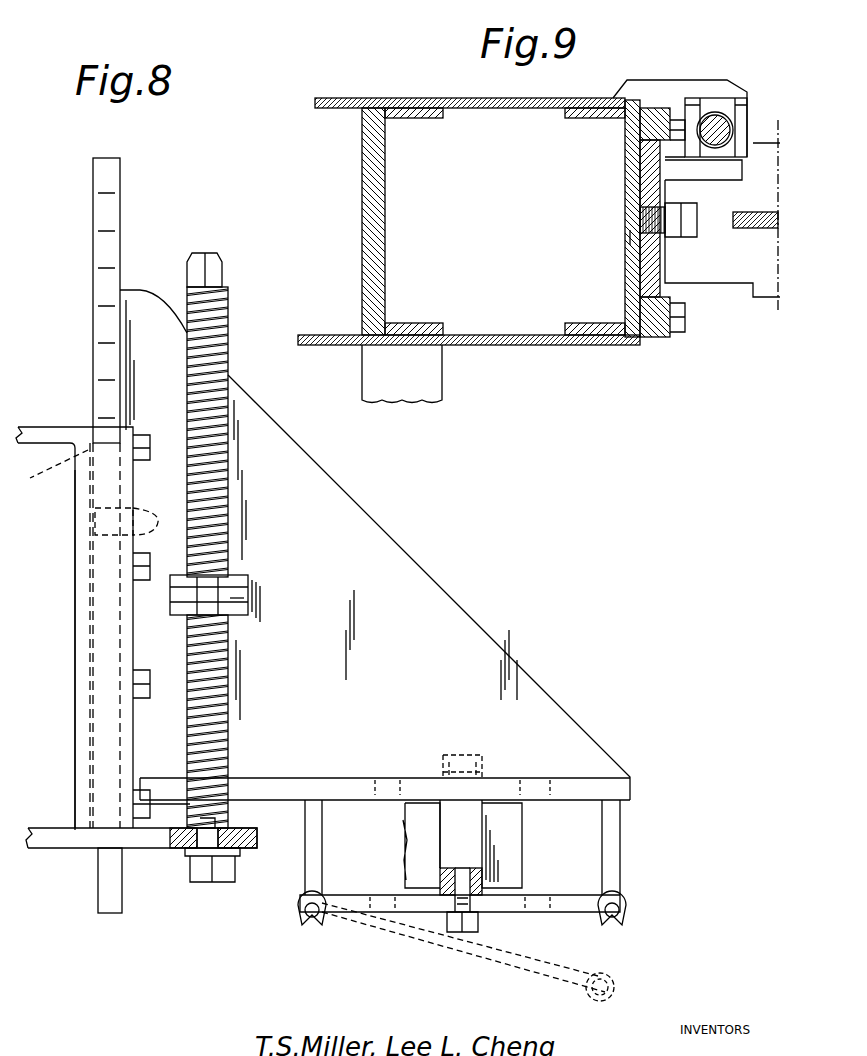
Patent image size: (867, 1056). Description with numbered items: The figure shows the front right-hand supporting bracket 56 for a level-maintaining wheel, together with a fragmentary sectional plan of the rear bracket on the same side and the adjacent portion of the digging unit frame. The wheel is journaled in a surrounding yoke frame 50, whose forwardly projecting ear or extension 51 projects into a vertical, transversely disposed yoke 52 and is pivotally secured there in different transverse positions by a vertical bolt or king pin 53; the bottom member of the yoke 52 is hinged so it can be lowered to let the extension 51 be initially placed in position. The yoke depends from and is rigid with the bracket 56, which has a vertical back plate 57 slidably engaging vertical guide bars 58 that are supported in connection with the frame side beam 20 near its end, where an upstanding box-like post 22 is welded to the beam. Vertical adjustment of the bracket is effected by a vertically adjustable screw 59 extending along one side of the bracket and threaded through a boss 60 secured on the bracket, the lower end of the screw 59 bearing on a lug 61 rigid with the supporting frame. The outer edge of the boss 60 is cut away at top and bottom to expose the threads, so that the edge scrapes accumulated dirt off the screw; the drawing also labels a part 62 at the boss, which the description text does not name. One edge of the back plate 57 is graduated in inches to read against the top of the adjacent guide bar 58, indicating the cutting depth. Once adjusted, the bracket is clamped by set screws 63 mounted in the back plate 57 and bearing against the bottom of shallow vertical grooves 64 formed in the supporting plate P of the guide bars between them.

In FIG. 8, the supporting plate P is at (80, 608).
In FIG. 9, the supporting plate P is at (625, 176).
In FIG. 9, the side beam 20 is at (423, 378).
In FIG. 9, the upstanding post 22 is at (577, 346).
In FIG. 8, the yoke frame 50 is at (505, 845).
In FIG. 8, the forwardly projecting ear 51 is at (450, 838).
In FIG. 8, the vertical transversely disposed yoke 52 is at (573, 900).
In FIG. 8, the vertical bolt or king pin 53 is at (447, 895).
In FIG. 8, the supporting bracket 56 is at (388, 558).
In FIG. 9, the supporting bracket 56 is at (732, 265).
In FIG. 8, the vertical back plate 57 is at (110, 215).
In FIG. 9, the vertical back plate 57 is at (645, 270).
In FIG. 8, the vertical guide bar 58 is at (103, 495).
In FIG. 9, the vertical guide bar 58 is at (662, 222).
In FIG. 8, the vertically adjustable screw 59 is at (212, 330).
In FIG. 9, the vertically adjustable screw 59 is at (740, 142).
In FIG. 8, the boss 60 is at (244, 598).
In FIG. 9, the boss 60 is at (692, 150).
In FIG. 8, the lug 61 is at (182, 850).
In FIG. 8, the collar 62 is at (217, 600).
In FIG. 9, the collar 62 is at (728, 115).
In FIG. 8, the set screw 63 is at (143, 505).
In FIG. 9, the set screw 63 is at (678, 222).
In FIG. 8, the shallow vertical groove 64 is at (59, 477).
In FIG. 9, the shallow vertical groove 64 is at (630, 237).